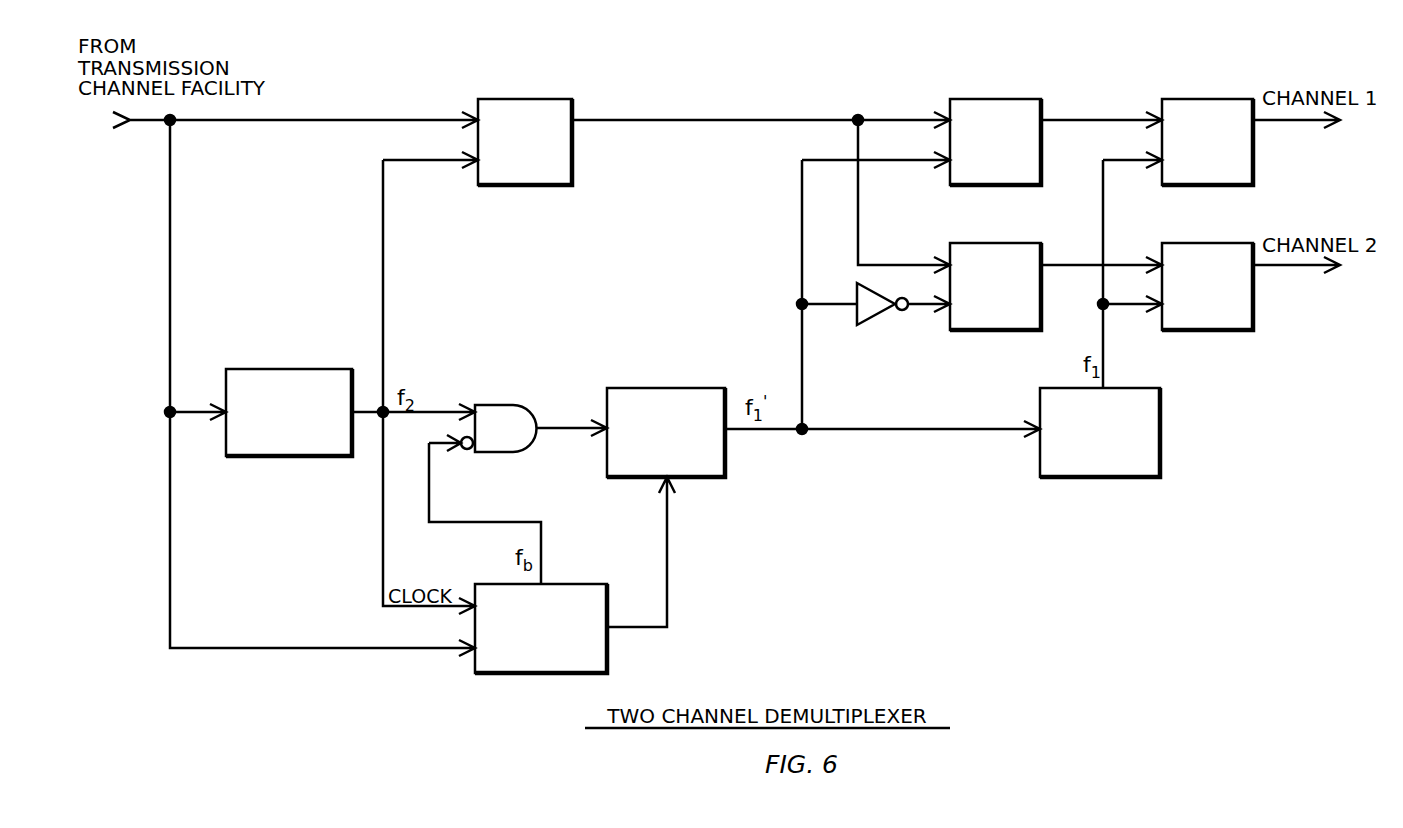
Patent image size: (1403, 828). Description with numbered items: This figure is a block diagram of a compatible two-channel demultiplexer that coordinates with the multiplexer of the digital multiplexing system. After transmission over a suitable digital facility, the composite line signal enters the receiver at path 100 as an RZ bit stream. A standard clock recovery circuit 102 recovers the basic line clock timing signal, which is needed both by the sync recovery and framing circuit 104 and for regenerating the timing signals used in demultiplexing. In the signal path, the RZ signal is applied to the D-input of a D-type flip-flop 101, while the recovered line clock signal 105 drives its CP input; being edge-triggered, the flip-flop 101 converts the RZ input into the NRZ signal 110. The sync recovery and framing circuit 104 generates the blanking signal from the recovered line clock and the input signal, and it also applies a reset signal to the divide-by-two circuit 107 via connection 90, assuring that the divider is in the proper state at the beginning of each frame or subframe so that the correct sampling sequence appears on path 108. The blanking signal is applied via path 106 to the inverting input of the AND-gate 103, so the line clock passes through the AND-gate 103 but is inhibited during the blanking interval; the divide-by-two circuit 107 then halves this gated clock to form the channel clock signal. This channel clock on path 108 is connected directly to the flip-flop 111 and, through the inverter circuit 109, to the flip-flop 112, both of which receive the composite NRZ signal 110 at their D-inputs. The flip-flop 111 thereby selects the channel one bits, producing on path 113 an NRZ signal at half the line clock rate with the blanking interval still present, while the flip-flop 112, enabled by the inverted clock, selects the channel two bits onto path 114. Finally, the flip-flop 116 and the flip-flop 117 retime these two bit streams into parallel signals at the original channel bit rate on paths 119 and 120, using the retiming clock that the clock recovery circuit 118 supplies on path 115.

The connection 90 is at (667, 577).
The path 100 is at (170, 240).
The D-type flip-flop 101 is at (513, 99).
The clock recovery circuit 102 is at (295, 369).
The AND-gate 103 is at (495, 405).
The sync recovery and framing circuit 104 is at (555, 584).
The f2 clock signal 105 is at (368, 414).
The path 106 is at (490, 522).
The divide-by-two circuit 107 is at (675, 388).
The path 108 is at (748, 431).
The inverter circuit 109 is at (870, 325).
The NRZ signal 110 is at (752, 122).
The flip-flop 111 is at (985, 99).
The flip-flop 112 is at (985, 243).
The path 113 is at (1085, 122).
The path 114 is at (1050, 267).
The path 115 is at (1103, 333).
The flip-flop 116 is at (1180, 99).
The flip-flop 117 is at (1180, 243).
The clock recovery circuit 118 is at (1160, 425).
The path 119 is at (1285, 122).
The path 120 is at (1275, 267).